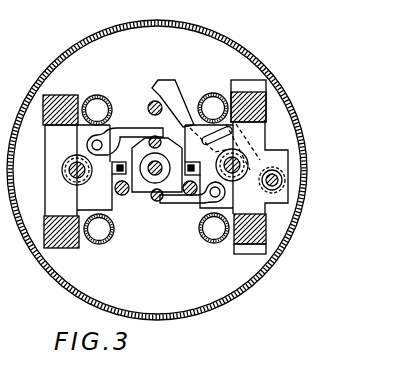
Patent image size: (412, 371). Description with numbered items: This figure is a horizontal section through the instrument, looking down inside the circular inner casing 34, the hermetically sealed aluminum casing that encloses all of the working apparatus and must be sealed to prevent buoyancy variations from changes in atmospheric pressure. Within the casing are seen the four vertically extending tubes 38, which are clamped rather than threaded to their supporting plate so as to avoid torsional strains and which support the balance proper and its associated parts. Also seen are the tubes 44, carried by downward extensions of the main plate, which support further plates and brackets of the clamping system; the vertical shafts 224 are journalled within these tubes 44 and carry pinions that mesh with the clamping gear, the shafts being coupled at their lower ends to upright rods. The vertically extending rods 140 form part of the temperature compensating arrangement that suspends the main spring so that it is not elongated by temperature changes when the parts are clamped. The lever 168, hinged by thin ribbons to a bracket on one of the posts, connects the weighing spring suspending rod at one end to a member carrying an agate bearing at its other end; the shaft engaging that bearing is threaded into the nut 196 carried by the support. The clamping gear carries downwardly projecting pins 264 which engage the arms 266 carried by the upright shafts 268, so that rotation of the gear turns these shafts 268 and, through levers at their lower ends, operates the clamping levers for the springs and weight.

The inner casing 34 is at (256, 61).
The vertically extending tubes 38 is at (93, 96).
The tubes 44 is at (63, 177).
The vertically extending rods 140 is at (152, 102).
The lever 168 is at (178, 88).
The nut 196 is at (283, 187).
The vertical shafts 224 is at (66, 166).
The pins 264 is at (172, 132).
The arms 266 is at (137, 130).
The upright shafts 268 is at (92, 146).